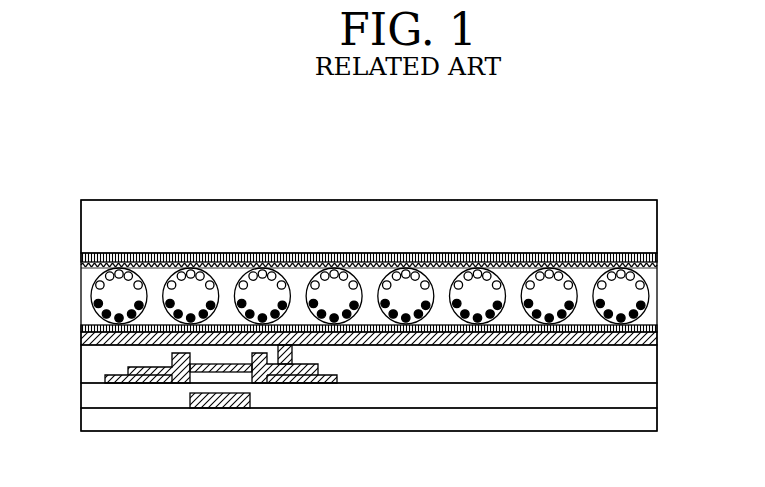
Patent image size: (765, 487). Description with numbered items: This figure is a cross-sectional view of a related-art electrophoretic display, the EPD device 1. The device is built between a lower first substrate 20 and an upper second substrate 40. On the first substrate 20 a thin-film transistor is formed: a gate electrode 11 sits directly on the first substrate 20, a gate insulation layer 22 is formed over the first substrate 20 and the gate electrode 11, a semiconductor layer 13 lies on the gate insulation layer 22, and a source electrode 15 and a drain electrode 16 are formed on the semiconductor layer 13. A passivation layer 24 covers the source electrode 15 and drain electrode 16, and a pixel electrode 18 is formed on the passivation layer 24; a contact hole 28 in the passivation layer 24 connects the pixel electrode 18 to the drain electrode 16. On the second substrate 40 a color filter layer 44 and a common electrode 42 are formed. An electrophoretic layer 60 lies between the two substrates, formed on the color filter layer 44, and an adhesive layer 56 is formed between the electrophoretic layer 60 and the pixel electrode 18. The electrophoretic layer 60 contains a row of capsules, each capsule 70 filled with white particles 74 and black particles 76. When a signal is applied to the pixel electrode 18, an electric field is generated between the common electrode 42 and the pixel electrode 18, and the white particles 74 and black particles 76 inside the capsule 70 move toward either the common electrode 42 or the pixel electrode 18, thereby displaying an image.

The EPD device 1 is at (351, 139).
The gate electrode 11 is at (223, 408).
The semiconductor layer 13 is at (162, 383).
The source electrode 15 is at (113, 383).
The drain electrode 16 is at (288, 383).
The pixel electrode 18 is at (648, 339).
The first substrate 20 is at (645, 418).
The gate insulation layer 22 is at (645, 393).
The passivation layer 24 is at (633, 368).
The contact hole 28 is at (292, 348).
The second substrate 40 is at (643, 219).
The common electrode 42 is at (638, 258).
The color filter layer 44 is at (87, 264).
The adhesive layer 56 is at (88, 328).
The electrophoretic layer 60 is at (371, 246).
The capsule 70 is at (630, 296).
The white particles 74 is at (645, 270).
The black particles 76 is at (640, 316).